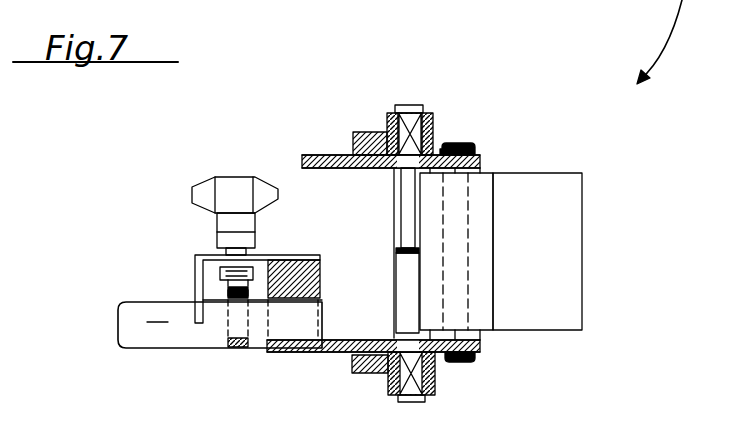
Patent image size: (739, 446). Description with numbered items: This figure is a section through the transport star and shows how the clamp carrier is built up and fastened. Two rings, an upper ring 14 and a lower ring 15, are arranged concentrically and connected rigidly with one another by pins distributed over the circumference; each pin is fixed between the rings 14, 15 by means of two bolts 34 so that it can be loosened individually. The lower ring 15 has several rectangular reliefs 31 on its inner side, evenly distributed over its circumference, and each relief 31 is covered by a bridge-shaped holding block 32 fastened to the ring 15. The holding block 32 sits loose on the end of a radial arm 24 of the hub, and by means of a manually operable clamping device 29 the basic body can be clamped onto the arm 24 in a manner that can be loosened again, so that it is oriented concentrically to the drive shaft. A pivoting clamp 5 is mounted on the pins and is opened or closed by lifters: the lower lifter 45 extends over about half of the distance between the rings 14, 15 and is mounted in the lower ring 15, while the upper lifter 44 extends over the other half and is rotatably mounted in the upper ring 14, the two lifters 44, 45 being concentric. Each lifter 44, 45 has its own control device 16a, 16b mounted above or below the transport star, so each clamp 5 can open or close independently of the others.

The pivoting clamp 5 is at (553, 242).
The upper ring 14 is at (487, 157).
The lower ring 15 is at (473, 348).
The control device 16a is at (383, 381).
The control device 16b is at (378, 115).
The radial arm 24 is at (140, 315).
The clamping device 29 is at (238, 207).
The rectangular relief 31 is at (307, 298).
The holding block 32 is at (293, 345).
The bolt 34 is at (450, 148).
The upper lifter 44 is at (408, 197).
The lower lifter 45 is at (412, 292).